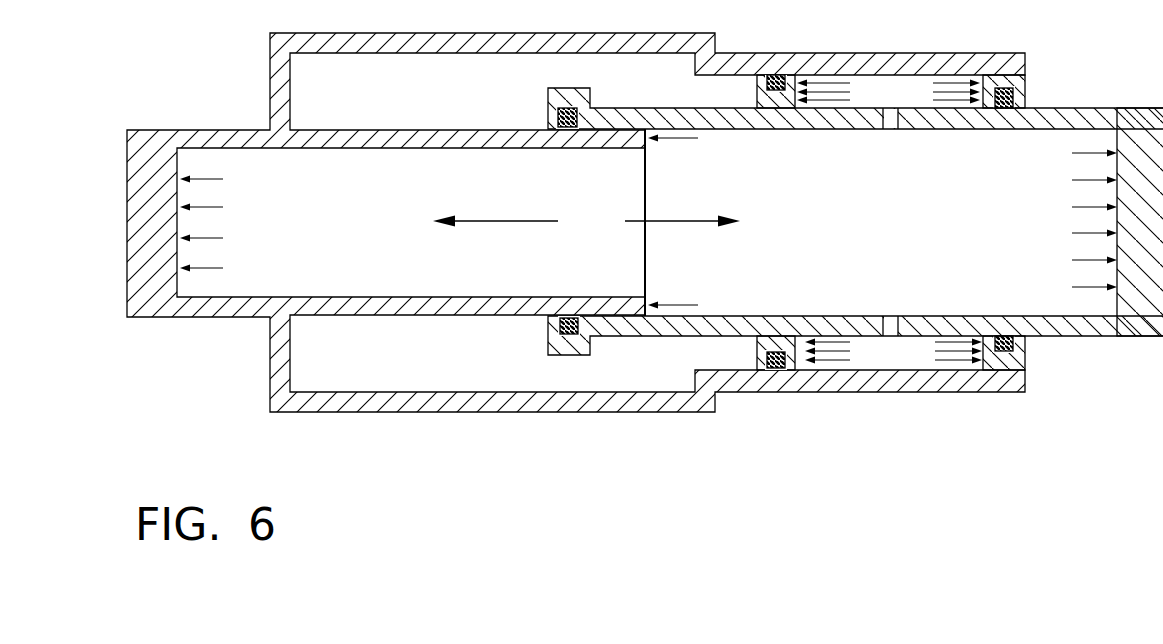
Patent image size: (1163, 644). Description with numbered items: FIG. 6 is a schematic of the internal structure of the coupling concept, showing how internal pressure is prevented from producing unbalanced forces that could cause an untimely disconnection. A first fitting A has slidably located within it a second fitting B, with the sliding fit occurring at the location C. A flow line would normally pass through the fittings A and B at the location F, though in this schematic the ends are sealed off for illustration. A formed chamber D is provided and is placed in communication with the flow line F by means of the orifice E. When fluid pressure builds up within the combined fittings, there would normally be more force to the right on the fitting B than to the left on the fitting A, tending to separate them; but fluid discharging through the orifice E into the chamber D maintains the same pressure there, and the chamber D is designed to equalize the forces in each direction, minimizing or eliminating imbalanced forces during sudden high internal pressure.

The first fitting A is at (197, 328).
The second fitting B is at (1102, 104).
The location of sliding fit C is at (627, 104).
The formed chamber D is at (870, 97).
The orifice E is at (895, 110).
The flow line F is at (586, 220).